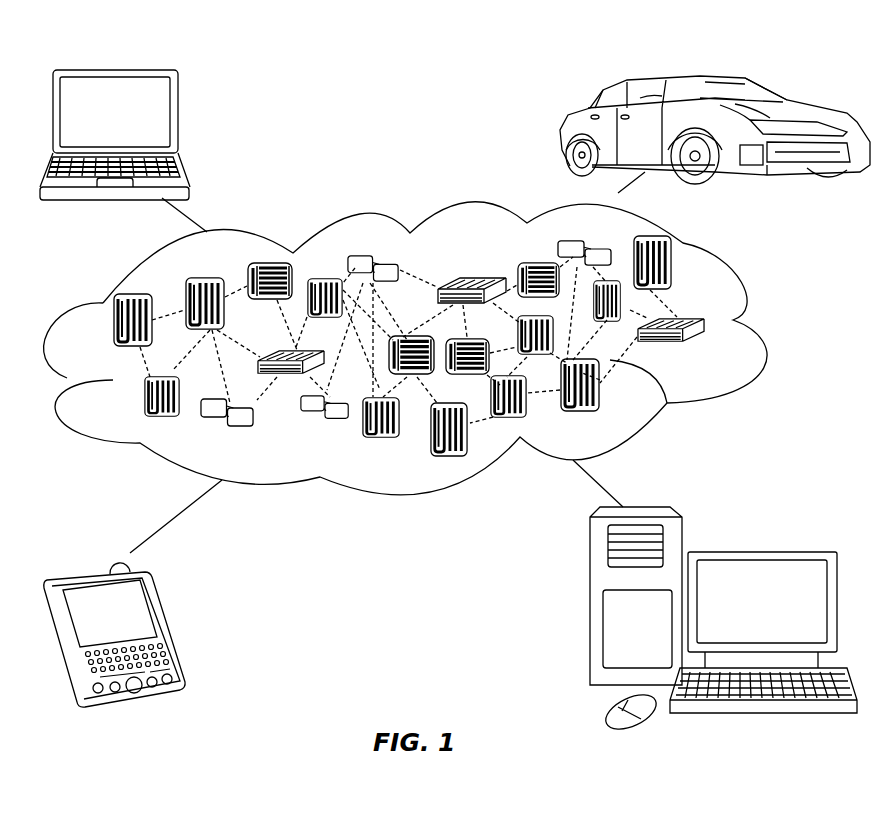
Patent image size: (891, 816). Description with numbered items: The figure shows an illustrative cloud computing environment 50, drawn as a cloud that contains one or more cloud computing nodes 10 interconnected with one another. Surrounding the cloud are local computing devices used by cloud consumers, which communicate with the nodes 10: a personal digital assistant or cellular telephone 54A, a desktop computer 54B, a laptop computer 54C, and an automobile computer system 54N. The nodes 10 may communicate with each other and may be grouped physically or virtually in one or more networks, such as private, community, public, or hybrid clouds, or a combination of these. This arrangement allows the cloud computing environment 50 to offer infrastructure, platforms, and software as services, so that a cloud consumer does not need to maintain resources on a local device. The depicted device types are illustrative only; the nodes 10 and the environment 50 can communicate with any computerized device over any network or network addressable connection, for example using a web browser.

The cloud computing nodes 10 is at (707, 353).
The cloud computing environment 50 is at (763, 330).
The personal digital assistant (PDA) or cellular telephone 54A is at (167, 627).
The desktop computer 54B is at (760, 550).
The laptop computer 54C is at (178, 120).
The automobile computer system 54N is at (565, 135).